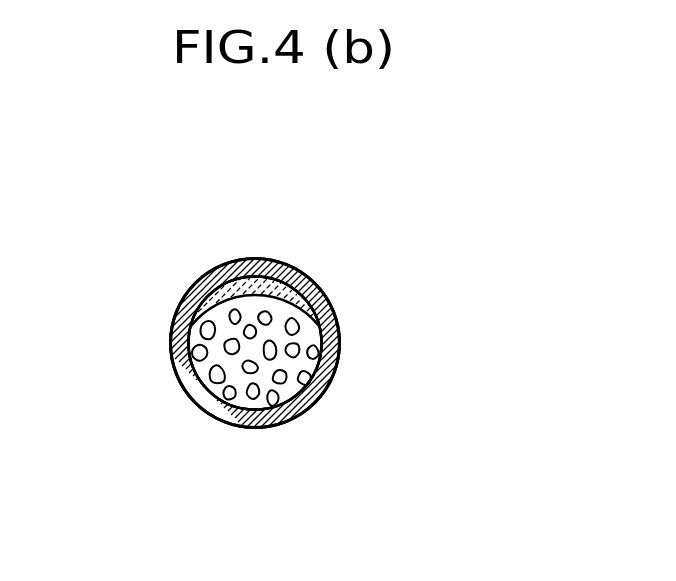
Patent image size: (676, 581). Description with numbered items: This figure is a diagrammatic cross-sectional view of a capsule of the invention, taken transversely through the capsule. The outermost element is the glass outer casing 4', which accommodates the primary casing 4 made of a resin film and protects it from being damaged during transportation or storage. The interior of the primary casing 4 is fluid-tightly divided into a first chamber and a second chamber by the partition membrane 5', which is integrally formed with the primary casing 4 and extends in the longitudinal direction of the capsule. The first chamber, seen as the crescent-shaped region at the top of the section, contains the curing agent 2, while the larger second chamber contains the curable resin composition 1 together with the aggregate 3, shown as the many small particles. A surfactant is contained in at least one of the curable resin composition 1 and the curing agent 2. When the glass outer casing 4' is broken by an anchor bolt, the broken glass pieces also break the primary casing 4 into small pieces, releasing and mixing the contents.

The curable resin composition 1 is at (253, 402).
The curing agent 2 is at (238, 290).
The aggregate 3 is at (281, 375).
The primary casing 4 is at (276, 337).
The glass outer casing 4' is at (255, 304).
The partition membrane 5' is at (227, 320).